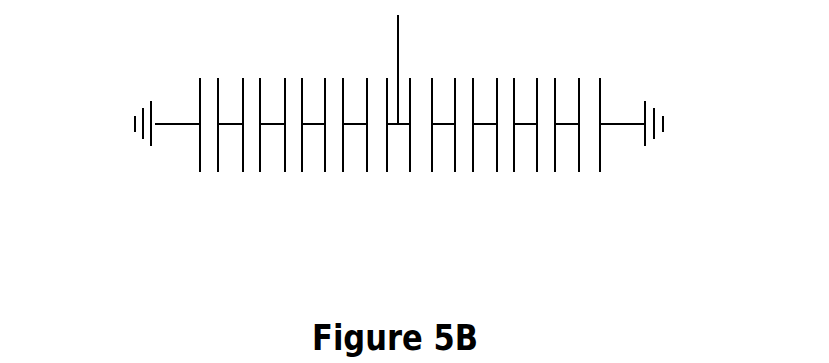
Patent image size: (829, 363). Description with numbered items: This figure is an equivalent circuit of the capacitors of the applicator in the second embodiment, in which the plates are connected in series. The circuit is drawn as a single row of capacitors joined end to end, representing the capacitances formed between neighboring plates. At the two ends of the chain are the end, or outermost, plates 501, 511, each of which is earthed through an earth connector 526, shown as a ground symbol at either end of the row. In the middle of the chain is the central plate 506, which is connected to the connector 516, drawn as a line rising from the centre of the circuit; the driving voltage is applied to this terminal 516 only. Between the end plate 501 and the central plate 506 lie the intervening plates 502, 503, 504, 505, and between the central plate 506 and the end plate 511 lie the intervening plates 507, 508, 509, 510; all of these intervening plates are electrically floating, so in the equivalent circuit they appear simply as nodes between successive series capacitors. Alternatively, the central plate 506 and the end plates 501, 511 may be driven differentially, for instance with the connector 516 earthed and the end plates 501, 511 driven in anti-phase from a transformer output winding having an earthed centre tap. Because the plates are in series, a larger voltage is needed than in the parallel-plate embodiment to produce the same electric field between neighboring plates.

The end plate 501 is at (200, 152).
The intervening plate 502 is at (230, 172).
The intervening plate 503 is at (272, 172).
The intervening plate 504 is at (314, 172).
The intervening plate 505 is at (355, 172).
The central plate 506 is at (398, 172).
The intervening plate 507 is at (444, 172).
The intervening plate 508 is at (485, 172).
The intervening plate 509 is at (526, 172).
The intervening plate 510 is at (567, 172).
The end plate 511 is at (600, 157).
The connector 516 is at (398, 42).
The earth connector 526 is at (695, 55).